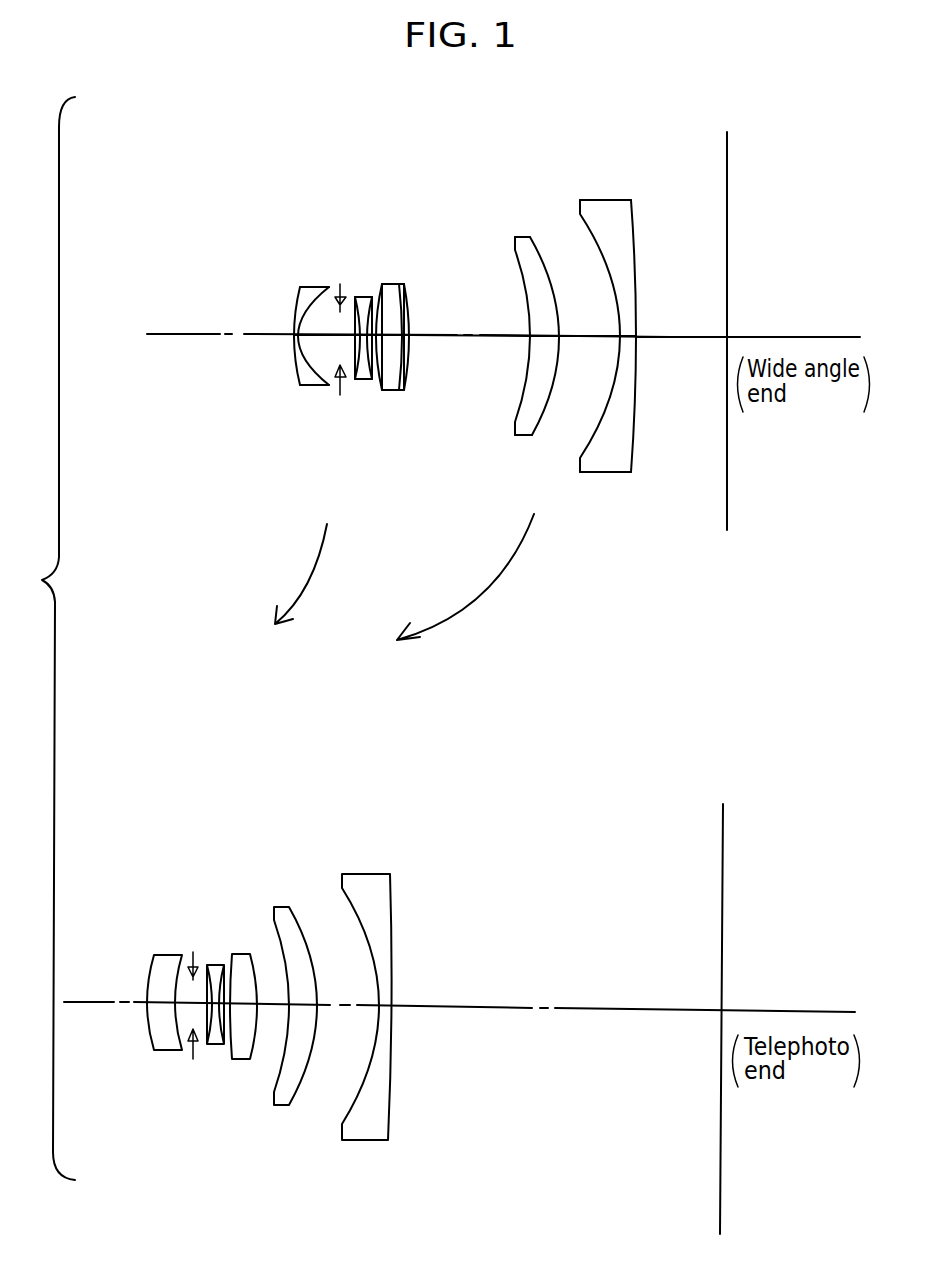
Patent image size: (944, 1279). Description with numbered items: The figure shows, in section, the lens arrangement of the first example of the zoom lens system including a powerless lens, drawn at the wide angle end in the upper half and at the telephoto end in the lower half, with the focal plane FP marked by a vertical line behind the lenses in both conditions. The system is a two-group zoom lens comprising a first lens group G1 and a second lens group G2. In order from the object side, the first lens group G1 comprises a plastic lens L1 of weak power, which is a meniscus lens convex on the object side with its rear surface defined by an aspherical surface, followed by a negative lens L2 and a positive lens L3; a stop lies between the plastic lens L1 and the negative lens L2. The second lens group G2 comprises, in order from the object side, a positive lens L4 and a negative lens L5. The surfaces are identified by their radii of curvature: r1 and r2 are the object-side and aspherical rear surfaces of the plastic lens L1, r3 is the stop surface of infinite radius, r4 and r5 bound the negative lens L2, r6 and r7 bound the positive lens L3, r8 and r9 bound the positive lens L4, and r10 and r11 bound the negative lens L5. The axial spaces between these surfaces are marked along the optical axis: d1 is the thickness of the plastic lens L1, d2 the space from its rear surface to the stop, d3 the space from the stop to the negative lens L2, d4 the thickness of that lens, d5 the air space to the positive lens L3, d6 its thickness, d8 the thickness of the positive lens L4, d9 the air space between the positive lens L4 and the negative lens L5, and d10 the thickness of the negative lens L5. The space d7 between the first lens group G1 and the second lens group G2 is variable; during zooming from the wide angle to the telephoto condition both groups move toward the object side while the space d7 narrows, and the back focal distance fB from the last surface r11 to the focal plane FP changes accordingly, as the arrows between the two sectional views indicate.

The radius of curvature of the first lens surface r1 is at (294, 300).
The radius of curvature of the second lens surface r2 is at (318, 295).
The radius of curvature of the third lens surface r3 is at (350, 293).
The radius of curvature of the fourth lens surface r4 is at (366, 294).
The radius of curvature of the fifth lens surface r5 is at (376, 296).
The radius of curvature of the sixth lens surface r6 is at (396, 300).
The radius of curvature of the seventh lens surface r7 is at (406, 310).
The radius of curvature of the eighth lens surface r8 is at (517, 265).
The radius of curvature of the ninth lens surface r9 is at (538, 238).
The radius of curvature of the tenth lens surface r10 is at (584, 243).
The radius of curvature of the eleventh lens surface r11 is at (633, 242).
The space between the first and second lens surfaces d1 is at (293, 383).
The space between the second and third lens surfaces d2 is at (323, 380).
The space between the third and fourth lens surfaces d3 is at (345, 380).
The space between the fourth and fifth lens surfaces d4 is at (364, 378).
The space between the fifth and sixth lens surfaces d5 is at (392, 392).
The space between the sixth and seventh lens surfaces d6 is at (400, 368).
The space between the first and second lens groups d7 is at (470, 357).
The space between the eighth and ninth lens surfaces d8 is at (540, 345).
The space between the ninth and tenth lens surfaces d9 is at (589, 357).
The space between the tenth and eleventh lens surfaces d10 is at (628, 342).
The back focal distance fB is at (679, 340).
The plastic lens L1 is at (299, 293).
The negative lens L2 is at (355, 290).
The positive lens L3 is at (414, 296).
The positive lens L4 is at (519, 298).
The negative lens L5 is at (611, 317).
The first lens group G1 is at (410, 157).
The second lens group G2 is at (643, 157).
The focal plane FP is at (726, 185).